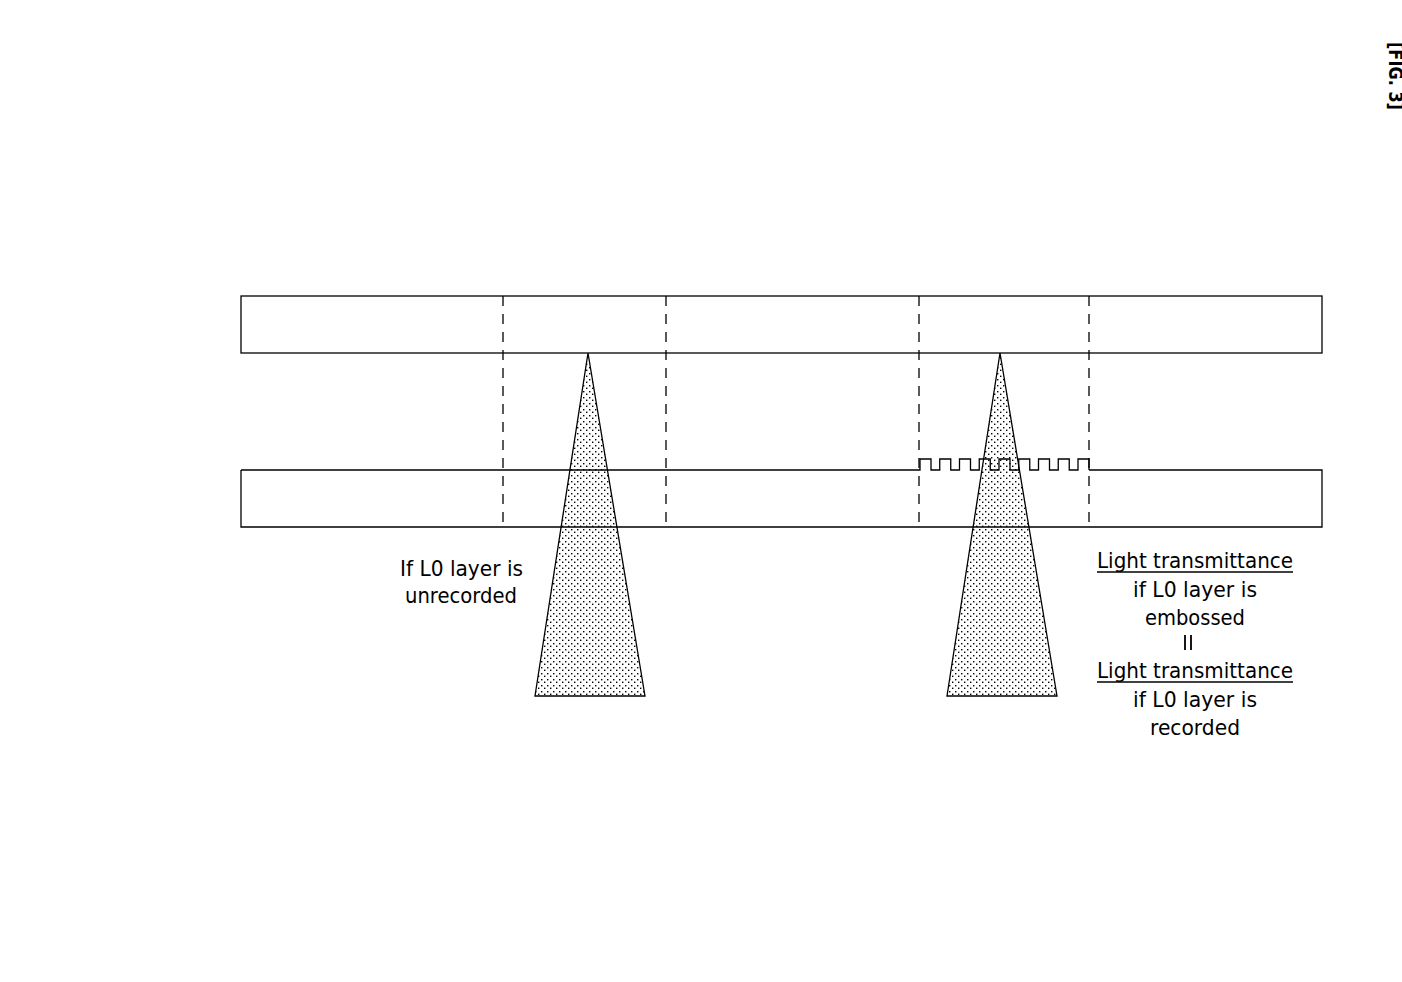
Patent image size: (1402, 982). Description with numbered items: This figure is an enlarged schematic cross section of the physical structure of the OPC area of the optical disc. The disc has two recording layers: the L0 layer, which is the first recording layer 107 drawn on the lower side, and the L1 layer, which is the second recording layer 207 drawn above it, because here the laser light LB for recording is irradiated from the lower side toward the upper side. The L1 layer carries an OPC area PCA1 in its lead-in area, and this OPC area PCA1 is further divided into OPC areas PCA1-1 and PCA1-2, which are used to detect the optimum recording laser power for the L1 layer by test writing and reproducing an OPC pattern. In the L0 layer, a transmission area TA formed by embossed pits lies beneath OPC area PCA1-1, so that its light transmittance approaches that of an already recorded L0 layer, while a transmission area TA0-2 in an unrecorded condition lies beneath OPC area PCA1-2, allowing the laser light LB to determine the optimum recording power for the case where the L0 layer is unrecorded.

The second recording layer 207 is at (1385, 353).
The first recording layer 107 is at (1385, 527).
The OPC area PCA1 is at (803, 251).
The OPC area PCA1-2 is at (594, 318).
The OPC area PCA1-1 is at (1017, 318).
The transmission area TA0-2 is at (651, 487).
The transmission area TA is at (1060, 478).
The laser light LB is at (783, 555).